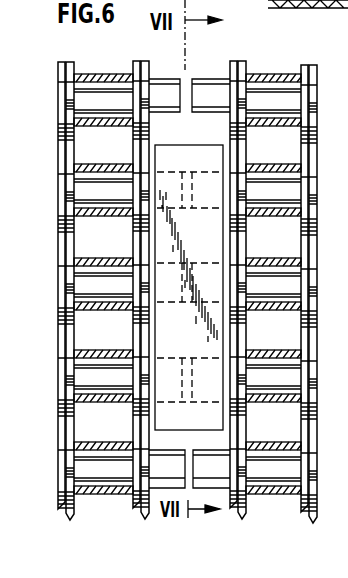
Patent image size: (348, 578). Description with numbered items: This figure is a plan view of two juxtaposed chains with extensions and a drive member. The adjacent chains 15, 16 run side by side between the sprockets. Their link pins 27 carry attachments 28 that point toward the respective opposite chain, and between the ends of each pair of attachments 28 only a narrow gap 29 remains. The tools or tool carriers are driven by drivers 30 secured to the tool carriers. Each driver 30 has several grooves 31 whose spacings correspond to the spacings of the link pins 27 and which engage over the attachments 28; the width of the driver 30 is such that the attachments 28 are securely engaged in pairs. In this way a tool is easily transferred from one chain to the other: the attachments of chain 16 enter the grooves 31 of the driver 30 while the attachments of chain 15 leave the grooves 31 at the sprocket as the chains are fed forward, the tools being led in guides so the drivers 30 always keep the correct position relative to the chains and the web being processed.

The chain 15 is at (74, 197).
The chain 16 is at (313, 134).
The link pin 27 is at (97, 187).
The attachment 28 is at (170, 95).
The gap 29 is at (189, 108).
The driver 30 is at (213, 243).
The groove 31 is at (297, 284).